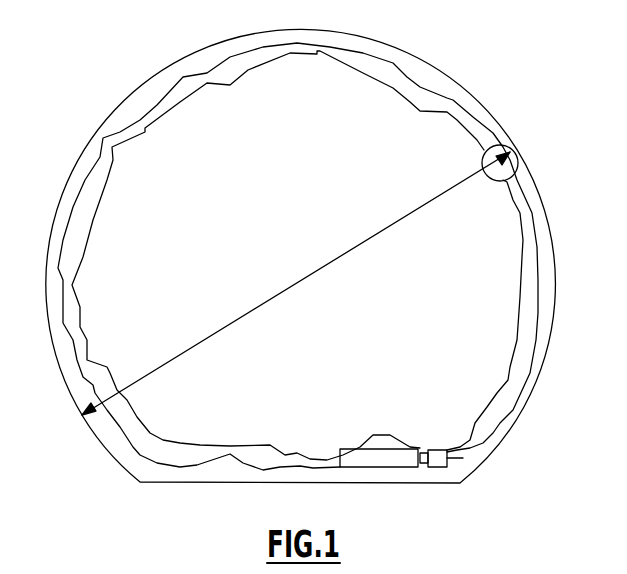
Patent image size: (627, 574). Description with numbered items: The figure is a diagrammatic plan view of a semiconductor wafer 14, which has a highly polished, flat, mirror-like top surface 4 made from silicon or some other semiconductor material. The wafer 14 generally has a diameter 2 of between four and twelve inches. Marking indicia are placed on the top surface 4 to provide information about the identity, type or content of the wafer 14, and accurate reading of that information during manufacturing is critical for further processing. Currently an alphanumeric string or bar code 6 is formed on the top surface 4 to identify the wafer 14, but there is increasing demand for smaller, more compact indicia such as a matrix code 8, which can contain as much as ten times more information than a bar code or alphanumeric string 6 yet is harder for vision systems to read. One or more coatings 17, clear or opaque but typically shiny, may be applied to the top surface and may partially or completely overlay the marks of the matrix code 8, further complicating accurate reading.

The diameter 2 is at (506, 179).
The top surface 4 is at (148, 350).
The alphanumeric string or bar code 6 is at (393, 462).
The matrix code 8 is at (455, 457).
The semiconductor wafer 14 is at (544, 196).
The coating 17 is at (505, 287).